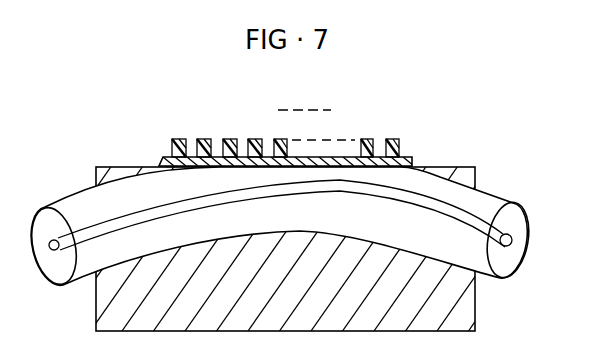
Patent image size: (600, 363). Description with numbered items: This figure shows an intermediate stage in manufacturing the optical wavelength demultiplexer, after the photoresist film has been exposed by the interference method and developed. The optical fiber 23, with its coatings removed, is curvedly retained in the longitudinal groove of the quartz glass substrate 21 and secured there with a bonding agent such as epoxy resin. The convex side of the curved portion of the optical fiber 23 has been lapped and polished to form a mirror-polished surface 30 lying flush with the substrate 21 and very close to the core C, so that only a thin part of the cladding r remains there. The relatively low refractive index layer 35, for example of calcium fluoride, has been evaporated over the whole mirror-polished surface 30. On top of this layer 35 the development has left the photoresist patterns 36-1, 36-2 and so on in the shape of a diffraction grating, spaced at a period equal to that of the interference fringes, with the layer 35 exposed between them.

The substrate 21 is at (463, 172).
The optical fiber 23 is at (497, 203).
The mirror-polished surface 30 is at (230, 167).
The relatively low refractive index layer 35 is at (409, 157).
The photoresist pattern 36-1 is at (176, 138).
The photoresist pattern 36-2 is at (204, 138).
The cladding r is at (518, 222).
The core C is at (517, 237).